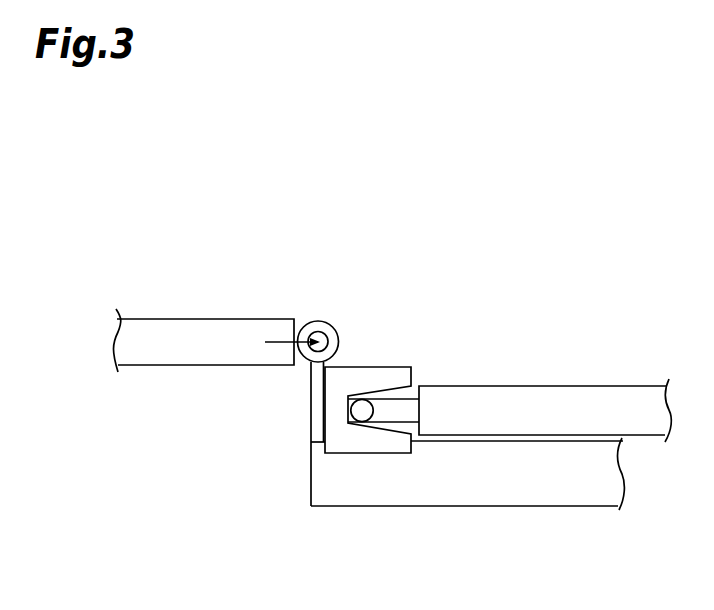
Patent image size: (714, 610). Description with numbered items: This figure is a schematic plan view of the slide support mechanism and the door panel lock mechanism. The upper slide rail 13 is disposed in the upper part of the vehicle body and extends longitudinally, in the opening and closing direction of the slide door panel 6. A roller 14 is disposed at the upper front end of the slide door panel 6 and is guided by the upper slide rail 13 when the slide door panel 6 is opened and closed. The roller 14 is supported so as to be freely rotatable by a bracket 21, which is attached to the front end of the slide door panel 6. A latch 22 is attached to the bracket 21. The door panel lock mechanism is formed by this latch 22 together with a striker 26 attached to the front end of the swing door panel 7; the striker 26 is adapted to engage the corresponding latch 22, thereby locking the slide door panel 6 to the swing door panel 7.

The slide door panel 6 is at (468, 482).
The swing door panel 7 is at (522, 402).
The upper slide rail 13 is at (198, 331).
The roller 14 is at (316, 321).
The bracket 21 is at (317, 402).
The latch 22 is at (369, 440).
The striker 26 is at (387, 403).